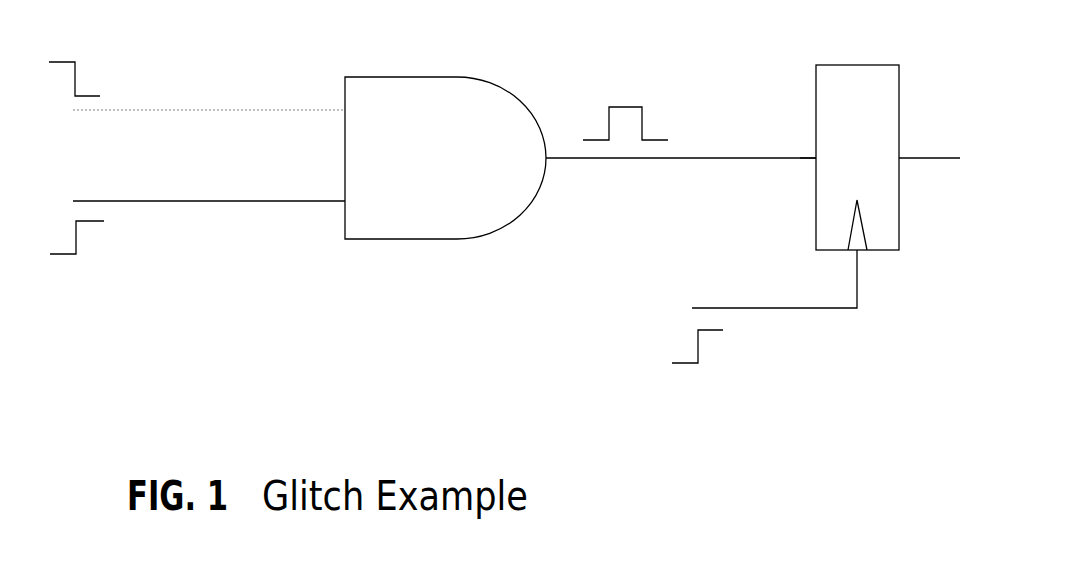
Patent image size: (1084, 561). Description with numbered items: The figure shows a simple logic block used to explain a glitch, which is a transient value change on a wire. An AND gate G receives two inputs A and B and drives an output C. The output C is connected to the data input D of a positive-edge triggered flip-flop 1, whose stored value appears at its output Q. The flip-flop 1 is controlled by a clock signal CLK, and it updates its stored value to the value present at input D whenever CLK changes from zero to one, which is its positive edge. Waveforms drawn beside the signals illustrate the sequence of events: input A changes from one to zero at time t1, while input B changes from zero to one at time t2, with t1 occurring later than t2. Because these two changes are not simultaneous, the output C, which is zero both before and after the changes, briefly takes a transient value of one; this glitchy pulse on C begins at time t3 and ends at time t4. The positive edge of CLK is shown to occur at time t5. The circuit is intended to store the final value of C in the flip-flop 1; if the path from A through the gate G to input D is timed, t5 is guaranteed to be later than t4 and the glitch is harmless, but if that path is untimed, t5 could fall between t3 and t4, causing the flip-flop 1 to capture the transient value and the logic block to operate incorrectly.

The flip-flop FF1 1 is at (857, 157).
The AND gate G is at (445, 158).
The input A is at (194, 112).
The input B is at (194, 201).
The output C is at (681, 143).
The input D is at (803, 145).
The output Q is at (929, 143).
The clock signal CLK is at (745, 289).
The time t1 is at (74, 57).
The time t2 is at (77, 261).
The time t3 is at (604, 103).
The time t4 is at (646, 103).
The time t5 is at (697, 369).